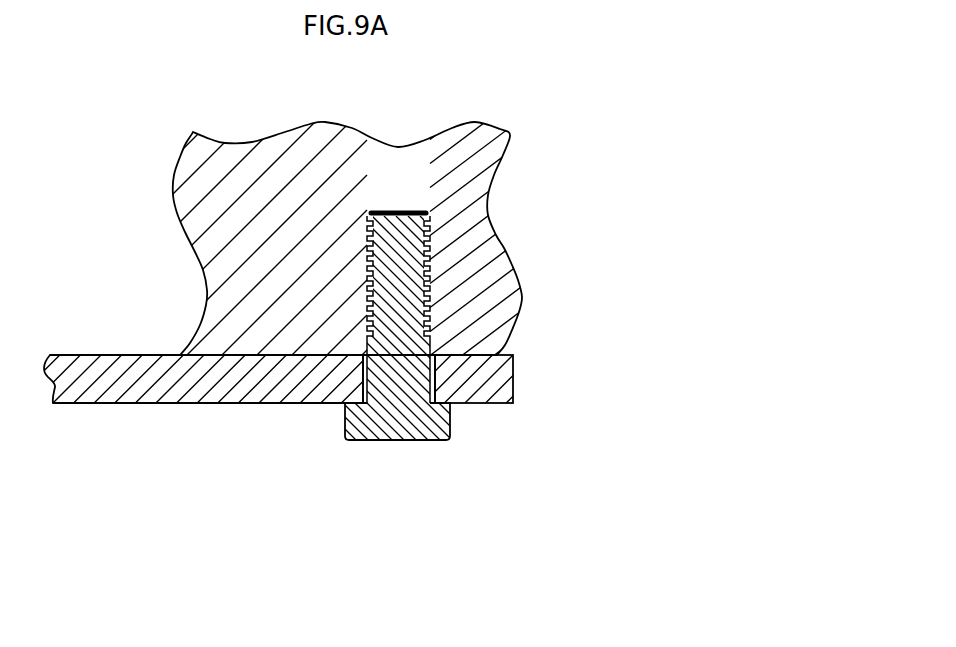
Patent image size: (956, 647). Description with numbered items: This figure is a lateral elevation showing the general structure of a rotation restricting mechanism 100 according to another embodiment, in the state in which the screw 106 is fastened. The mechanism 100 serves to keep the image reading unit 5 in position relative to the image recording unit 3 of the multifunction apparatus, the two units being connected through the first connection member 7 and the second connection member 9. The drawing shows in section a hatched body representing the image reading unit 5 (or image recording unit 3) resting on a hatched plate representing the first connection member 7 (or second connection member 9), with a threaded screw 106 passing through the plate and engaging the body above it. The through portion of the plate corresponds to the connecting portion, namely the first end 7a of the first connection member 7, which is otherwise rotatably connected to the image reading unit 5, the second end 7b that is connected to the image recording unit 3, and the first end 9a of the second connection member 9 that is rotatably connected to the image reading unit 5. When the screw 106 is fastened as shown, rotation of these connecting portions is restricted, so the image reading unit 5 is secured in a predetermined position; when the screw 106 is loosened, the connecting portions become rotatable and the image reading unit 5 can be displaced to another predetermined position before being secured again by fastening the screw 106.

The rotation restricting mechanism 100 is at (497, 516).
The image reading unit 5 is at (429, 238).
The image recording unit 3 is at (495, 273).
The first connection member 7 is at (368, 427).
The second connection member 9 is at (493, 380).
The first end of the first connection member 7a is at (412, 435).
The second end of the first connection member 7b is at (412, 435).
The first end of the second connection member 9a is at (433, 402).
The screw 106 is at (417, 382).